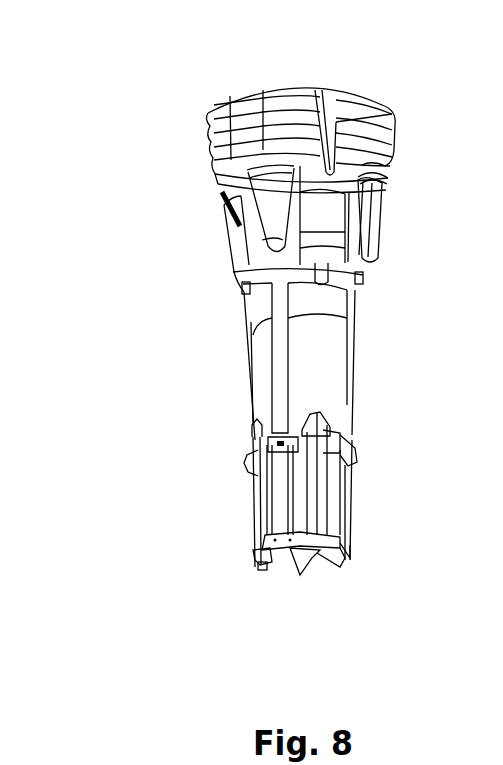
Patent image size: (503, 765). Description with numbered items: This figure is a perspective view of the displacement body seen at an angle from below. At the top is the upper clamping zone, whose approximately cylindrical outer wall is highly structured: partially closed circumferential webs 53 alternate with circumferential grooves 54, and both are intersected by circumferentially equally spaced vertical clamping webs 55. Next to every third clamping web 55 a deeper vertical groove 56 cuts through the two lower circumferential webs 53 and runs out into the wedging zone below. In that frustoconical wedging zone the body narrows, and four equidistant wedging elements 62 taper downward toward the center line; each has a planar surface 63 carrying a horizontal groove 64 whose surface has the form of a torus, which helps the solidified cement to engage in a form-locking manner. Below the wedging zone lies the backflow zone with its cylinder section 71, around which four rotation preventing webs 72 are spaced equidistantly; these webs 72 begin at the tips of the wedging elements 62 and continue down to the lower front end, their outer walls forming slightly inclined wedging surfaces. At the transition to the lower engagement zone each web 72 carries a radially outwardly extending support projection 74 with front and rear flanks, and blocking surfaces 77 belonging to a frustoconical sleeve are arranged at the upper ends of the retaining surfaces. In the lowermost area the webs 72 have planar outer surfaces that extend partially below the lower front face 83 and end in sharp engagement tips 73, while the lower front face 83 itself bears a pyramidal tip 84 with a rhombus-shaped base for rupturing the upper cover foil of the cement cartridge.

The circumferential webs 53 is at (245, 105).
The circumferential grooves 54 is at (245, 131).
The vertical clamping webs 55 is at (232, 150).
The vertical groove 56 is at (275, 157).
The horizontal groove 64 is at (222, 192).
The wedging element 62 is at (237, 226).
The planar surface 63 is at (273, 228).
The rotation preventing webs 72 is at (279, 350).
The cylinder section 71 is at (260, 395).
The support projection 74 is at (247, 463).
The blocking surfaces 77 is at (290, 447).
The engagement tips 73 is at (262, 572).
The lower front face 83 is at (281, 558).
The pyramidal tip 84 is at (310, 568).